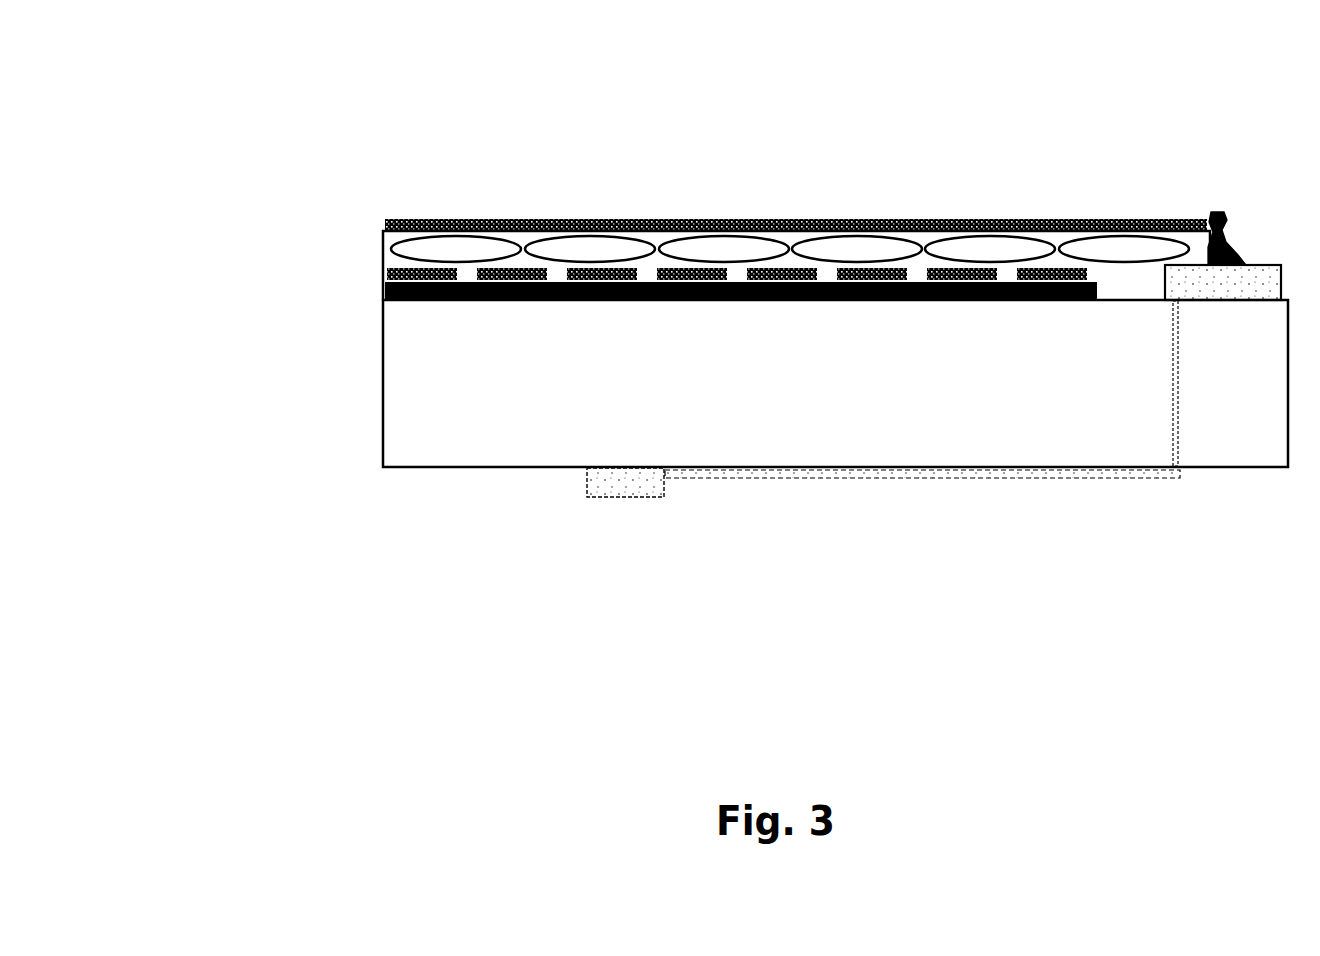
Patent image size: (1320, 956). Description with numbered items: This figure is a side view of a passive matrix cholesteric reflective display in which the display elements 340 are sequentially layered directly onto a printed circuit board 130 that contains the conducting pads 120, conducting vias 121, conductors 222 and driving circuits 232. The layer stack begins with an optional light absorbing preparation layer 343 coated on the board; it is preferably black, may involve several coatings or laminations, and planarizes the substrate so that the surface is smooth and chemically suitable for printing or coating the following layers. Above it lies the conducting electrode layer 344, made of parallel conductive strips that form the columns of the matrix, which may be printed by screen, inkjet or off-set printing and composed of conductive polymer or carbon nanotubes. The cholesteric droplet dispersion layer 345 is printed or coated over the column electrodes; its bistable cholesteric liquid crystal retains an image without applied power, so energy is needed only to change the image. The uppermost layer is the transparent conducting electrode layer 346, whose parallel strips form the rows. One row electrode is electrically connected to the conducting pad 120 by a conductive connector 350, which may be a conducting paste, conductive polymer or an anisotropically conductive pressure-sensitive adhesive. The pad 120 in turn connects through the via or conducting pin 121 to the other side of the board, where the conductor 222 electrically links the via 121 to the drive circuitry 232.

The display elements 340 is at (178, 82).
The transparent conducting electrode layer 346 is at (410, 222).
The cholesteric droplet dispersion layer 345 is at (383, 247).
The conducting electrode layer 344 is at (383, 274).
The light absorbing preparation layer 343 is at (383, 296).
The printed circuit board 130 is at (440, 393).
The conducting via 121 is at (1173, 367).
The conducting pad 120 is at (1246, 280).
The conductive connector 350 is at (1218, 212).
The driving circuits 232 is at (606, 488).
The conductor 222 is at (830, 475).